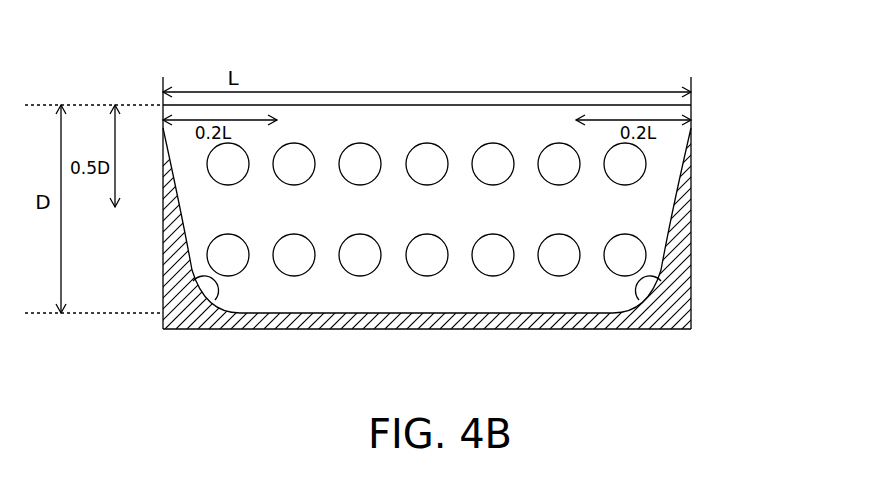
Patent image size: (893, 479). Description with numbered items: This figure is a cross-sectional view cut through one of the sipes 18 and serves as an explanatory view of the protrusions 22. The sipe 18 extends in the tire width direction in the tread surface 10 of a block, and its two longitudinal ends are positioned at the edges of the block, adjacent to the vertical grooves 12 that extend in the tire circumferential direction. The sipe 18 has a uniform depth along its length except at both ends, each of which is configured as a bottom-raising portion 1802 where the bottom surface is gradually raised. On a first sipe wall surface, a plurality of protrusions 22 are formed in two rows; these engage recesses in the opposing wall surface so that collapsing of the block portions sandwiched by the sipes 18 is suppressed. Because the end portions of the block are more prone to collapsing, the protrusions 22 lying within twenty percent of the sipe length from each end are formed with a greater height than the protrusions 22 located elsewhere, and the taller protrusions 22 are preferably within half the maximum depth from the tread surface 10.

The tread surface 10 is at (302, 103).
The vertical grooves 12 is at (97, 253).
The sipes 18 is at (553, 122).
The protrusions 22 is at (360, 157).
The bottom-raising portion 1802 is at (207, 303).